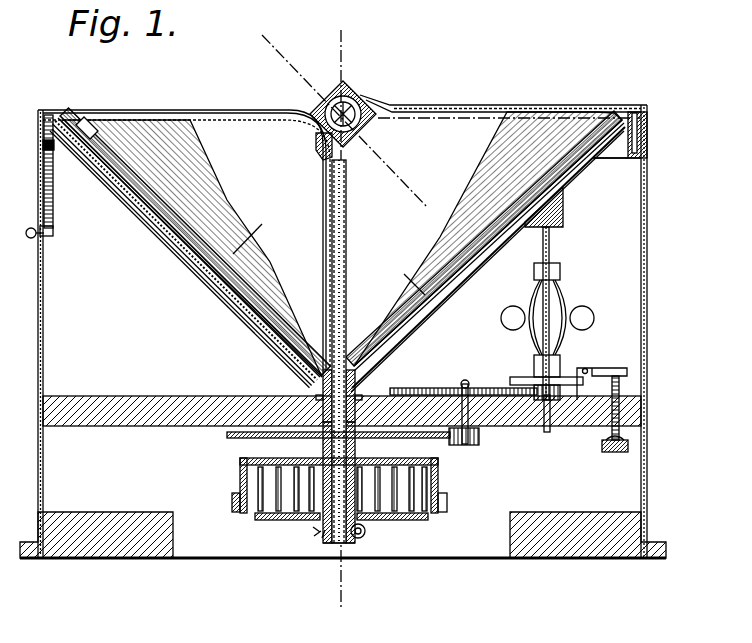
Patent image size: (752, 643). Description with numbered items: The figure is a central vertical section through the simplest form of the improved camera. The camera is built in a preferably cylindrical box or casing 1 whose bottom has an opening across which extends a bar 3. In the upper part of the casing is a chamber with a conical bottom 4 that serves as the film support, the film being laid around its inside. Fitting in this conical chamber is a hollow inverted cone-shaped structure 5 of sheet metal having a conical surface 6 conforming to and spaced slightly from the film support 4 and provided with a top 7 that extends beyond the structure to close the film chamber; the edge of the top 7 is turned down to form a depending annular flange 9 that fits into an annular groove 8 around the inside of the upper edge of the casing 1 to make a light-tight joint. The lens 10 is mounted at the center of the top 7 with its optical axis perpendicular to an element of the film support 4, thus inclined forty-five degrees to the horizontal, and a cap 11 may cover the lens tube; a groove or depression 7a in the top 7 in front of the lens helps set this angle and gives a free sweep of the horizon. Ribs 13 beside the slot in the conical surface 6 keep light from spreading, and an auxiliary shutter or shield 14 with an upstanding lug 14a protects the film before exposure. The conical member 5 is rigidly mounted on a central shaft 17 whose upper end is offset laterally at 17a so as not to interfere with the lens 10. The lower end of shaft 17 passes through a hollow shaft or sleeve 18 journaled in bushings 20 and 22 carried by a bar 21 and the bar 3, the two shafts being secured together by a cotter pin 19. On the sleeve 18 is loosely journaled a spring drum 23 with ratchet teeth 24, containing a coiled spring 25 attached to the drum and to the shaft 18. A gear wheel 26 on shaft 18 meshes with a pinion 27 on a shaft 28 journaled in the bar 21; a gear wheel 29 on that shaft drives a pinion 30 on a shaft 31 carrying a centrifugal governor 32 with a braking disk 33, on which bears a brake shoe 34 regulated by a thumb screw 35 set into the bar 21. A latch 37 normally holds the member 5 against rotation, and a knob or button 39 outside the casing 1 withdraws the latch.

The box or casing 1 is at (648, 297).
The bar 3 is at (405, 520).
The conical bottom 4 is at (266, 312).
The hollow inverted cone-shaped structure 5 is at (484, 238).
The conical surface 6 is at (195, 242).
The top 7 is at (432, 104).
The groove or depression 7a is at (247, 112).
The annular groove 8 is at (648, 137).
The depending annular flange 9 is at (630, 142).
The lens 10 is at (334, 98).
The cap 11 is at (352, 97).
The ribs 13 is at (463, 250).
The auxiliary shutter or shield 14 is at (177, 238).
The upstanding lug 14a is at (86, 117).
The central shaft 17 is at (343, 338).
The laterally offset upper end of shaft 17a is at (323, 197).
The hollow shaft or sleeve 18 is at (322, 455).
The cotter pin 19 is at (358, 540).
The bushing 20 is at (318, 400).
The bar 21 is at (140, 426).
The bushing 22 is at (310, 522).
The spring drum 23 is at (240, 468).
The ratchet teeth 24 is at (232, 500).
The coiled spring 25 is at (422, 480).
The gear wheel 26 is at (338, 447).
The pinion 27 is at (478, 440).
The shaft 28 is at (465, 448).
The gear wheel 29 is at (426, 388).
The pinion 30 is at (548, 432).
The shaft 31 is at (549, 255).
The centrifugal governor 32 is at (580, 306).
The braking disk 33 is at (572, 382).
The brake shoe 34 is at (612, 368).
The thumb screw 35 is at (630, 451).
The latch 37 is at (52, 180).
The knob or button 39 is at (27, 237).